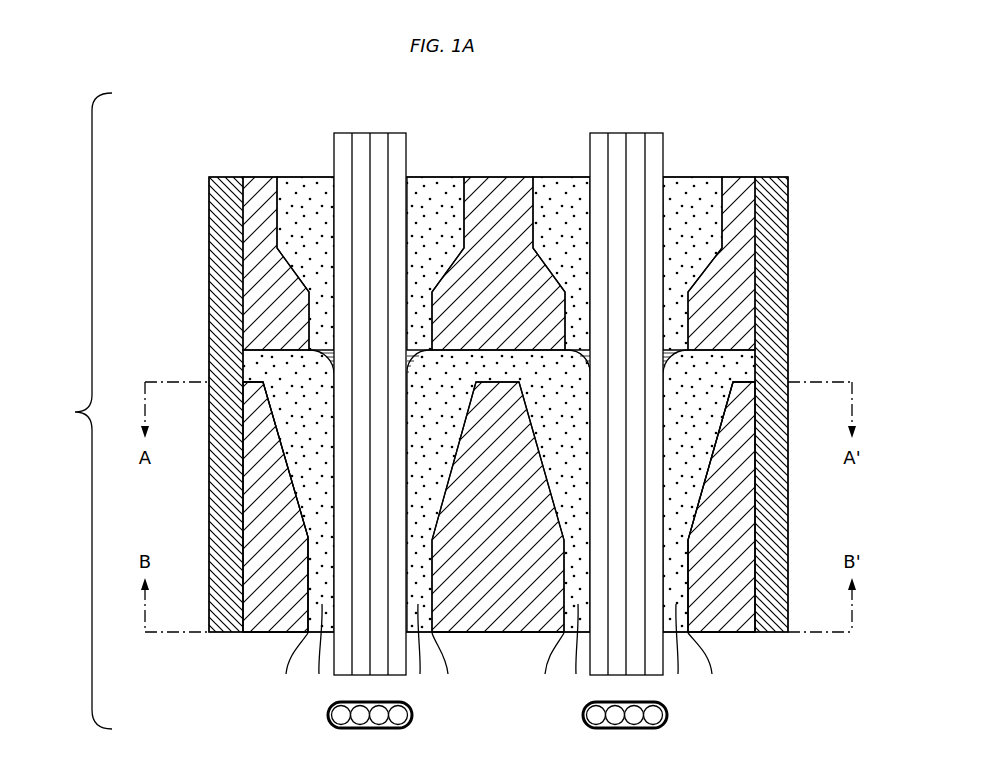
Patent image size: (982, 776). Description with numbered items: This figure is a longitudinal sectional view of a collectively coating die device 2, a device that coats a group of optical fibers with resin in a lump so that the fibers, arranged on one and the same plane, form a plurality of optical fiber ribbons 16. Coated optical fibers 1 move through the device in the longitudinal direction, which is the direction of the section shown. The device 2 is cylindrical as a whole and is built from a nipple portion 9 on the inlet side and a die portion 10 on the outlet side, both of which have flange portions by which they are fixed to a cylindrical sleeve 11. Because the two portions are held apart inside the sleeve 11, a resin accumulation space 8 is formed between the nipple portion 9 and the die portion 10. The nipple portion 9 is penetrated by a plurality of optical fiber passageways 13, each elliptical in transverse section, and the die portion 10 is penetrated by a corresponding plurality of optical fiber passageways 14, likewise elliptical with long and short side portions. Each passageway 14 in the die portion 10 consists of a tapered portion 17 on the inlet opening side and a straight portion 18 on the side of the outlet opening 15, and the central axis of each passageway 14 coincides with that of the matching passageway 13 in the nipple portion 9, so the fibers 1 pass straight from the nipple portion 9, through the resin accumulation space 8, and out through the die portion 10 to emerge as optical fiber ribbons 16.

The coated optical fiber 1 is at (334, 124).
The collectively coating die device 2 is at (812, 148).
The resin accumulation space 8 is at (270, 362).
The nipple portion 9 is at (262, 184).
The die portion 10 is at (260, 486).
The cylindrical sleeve 11 is at (218, 255).
The optical fiber passageway 13 is at (307, 272).
The optical fiber passageway 14 is at (316, 482).
The outlet opening 15 is at (499, 667).
The optical fiber ribbon 16 is at (590, 737).
The tapered portion 17 is at (292, 492).
The straight portion 18 is at (308, 597).